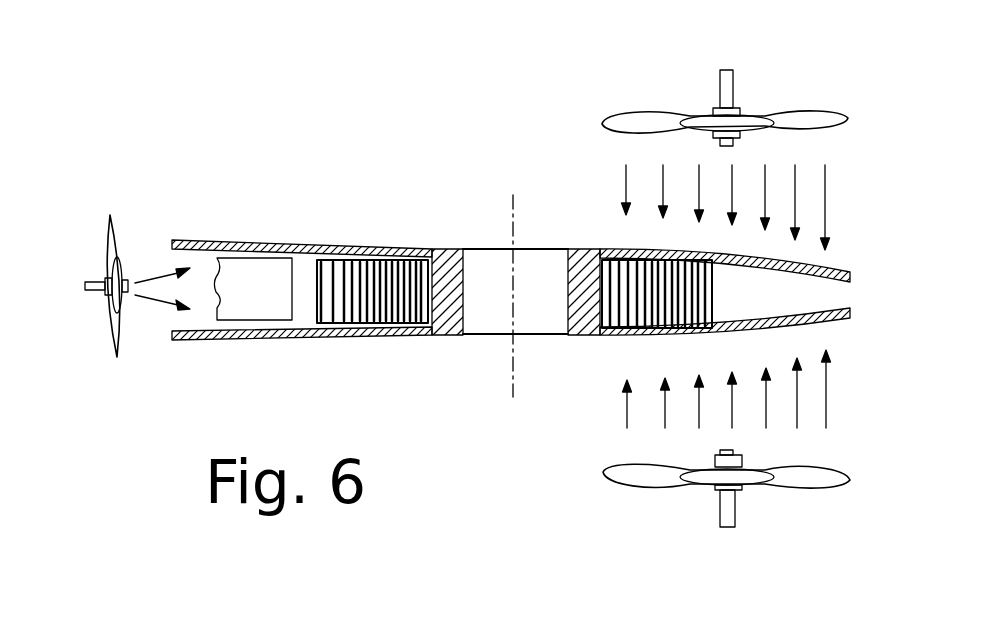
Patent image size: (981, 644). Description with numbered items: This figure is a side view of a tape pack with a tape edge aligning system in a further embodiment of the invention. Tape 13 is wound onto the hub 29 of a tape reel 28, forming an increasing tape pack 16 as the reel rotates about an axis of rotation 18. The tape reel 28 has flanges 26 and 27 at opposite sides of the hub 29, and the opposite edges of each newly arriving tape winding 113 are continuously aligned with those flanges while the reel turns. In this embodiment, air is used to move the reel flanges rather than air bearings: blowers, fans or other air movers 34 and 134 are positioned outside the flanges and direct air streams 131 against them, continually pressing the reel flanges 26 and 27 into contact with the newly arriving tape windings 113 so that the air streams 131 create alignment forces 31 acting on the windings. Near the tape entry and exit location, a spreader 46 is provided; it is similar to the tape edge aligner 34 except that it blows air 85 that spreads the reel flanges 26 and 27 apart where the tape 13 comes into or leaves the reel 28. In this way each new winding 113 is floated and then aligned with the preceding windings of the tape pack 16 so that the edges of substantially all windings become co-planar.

The tape 13 is at (292, 306).
The tape pack 16 is at (370, 240).
The axis of rotation 18 is at (513, 213).
The reel flange 26 is at (848, 268).
The reel flange 27 is at (850, 320).
The tape reel 28 is at (322, 235).
The hub 29 is at (466, 288).
The alignment forces 31 is at (626, 190).
The air mover 34 is at (797, 98).
The spreader 46 is at (123, 236).
The air 85 is at (160, 302).
The tape winding 113 is at (712, 300).
The air streams 131 is at (826, 200).
The air mover 134 is at (630, 486).